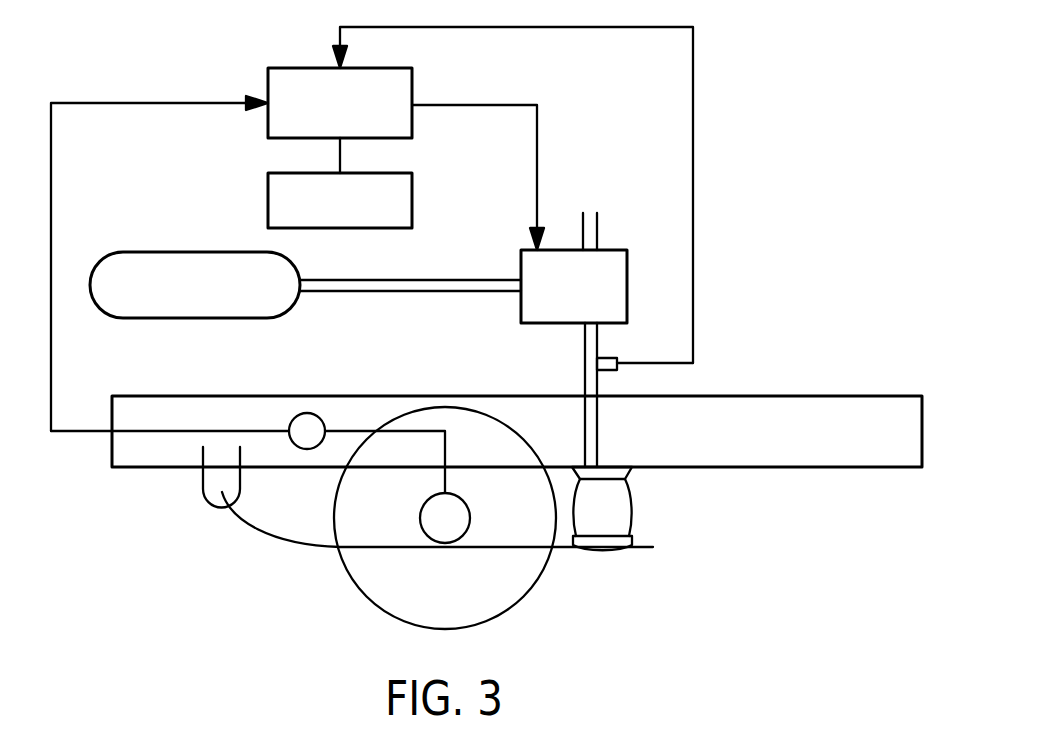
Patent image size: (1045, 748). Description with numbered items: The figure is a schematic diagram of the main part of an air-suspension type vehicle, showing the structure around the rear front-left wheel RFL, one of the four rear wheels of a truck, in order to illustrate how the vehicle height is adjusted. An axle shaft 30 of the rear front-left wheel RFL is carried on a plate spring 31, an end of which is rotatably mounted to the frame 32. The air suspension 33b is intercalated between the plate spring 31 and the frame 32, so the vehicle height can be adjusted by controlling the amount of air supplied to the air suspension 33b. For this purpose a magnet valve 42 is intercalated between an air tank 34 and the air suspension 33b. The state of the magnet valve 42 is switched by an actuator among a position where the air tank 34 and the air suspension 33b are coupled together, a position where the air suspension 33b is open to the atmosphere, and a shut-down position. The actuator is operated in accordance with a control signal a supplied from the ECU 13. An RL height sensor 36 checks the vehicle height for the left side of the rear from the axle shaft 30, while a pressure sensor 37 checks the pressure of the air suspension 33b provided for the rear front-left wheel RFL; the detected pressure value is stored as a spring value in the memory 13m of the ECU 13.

The ECU 13 is at (290, 68).
The memory 13m is at (412, 200).
The control signal a is at (537, 160).
The magnet valve 42 is at (627, 290).
The air tank 34 is at (175, 252).
The pressure sensor 37 is at (607, 372).
The frame 32 is at (876, 396).
The RL height sensor 36 is at (300, 413).
The rear front-left wheel RFL is at (537, 578).
The axle shaft 30 is at (433, 527).
The plate spring 31 is at (240, 527).
The air suspension 33b is at (632, 507).